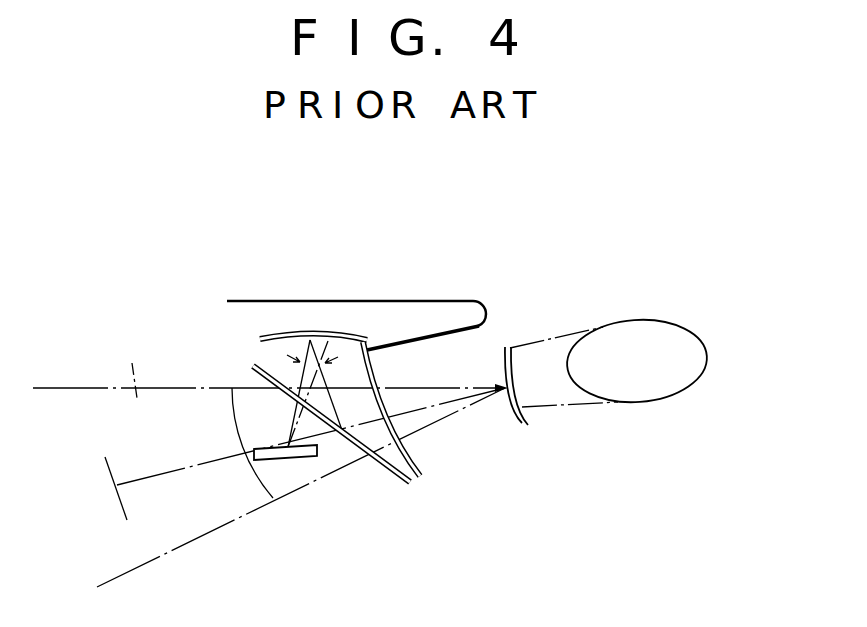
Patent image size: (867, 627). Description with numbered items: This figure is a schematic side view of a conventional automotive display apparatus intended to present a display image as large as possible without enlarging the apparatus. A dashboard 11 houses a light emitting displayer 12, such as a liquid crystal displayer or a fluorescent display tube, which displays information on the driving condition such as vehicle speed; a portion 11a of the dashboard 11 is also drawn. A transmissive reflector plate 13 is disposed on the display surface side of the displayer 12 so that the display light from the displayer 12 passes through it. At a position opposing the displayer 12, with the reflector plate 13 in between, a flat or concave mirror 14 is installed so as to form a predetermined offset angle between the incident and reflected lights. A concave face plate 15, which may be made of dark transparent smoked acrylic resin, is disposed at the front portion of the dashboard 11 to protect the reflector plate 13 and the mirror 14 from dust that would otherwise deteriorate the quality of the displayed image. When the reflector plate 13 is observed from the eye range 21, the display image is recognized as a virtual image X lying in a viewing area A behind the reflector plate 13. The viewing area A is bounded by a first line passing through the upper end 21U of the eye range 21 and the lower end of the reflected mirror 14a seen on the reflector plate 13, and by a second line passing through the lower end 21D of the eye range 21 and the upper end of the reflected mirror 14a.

The dashboard 11 is at (243, 305).
The arm of housing 11a is at (455, 300).
The light emitting displayer 12 is at (270, 458).
The transmissive reflector plate 13 is at (395, 472).
The mirror 14 is at (328, 336).
The mirror reflected on the reflector plate 14a is at (236, 425).
The concave face plate 15 is at (423, 468).
The eye range 21 is at (693, 380).
The upper end of the eye range 21U is at (584, 310).
The lower end of the eye range 21D is at (597, 431).
The viewing area A is at (269, 364).
The virtual image X is at (113, 493).